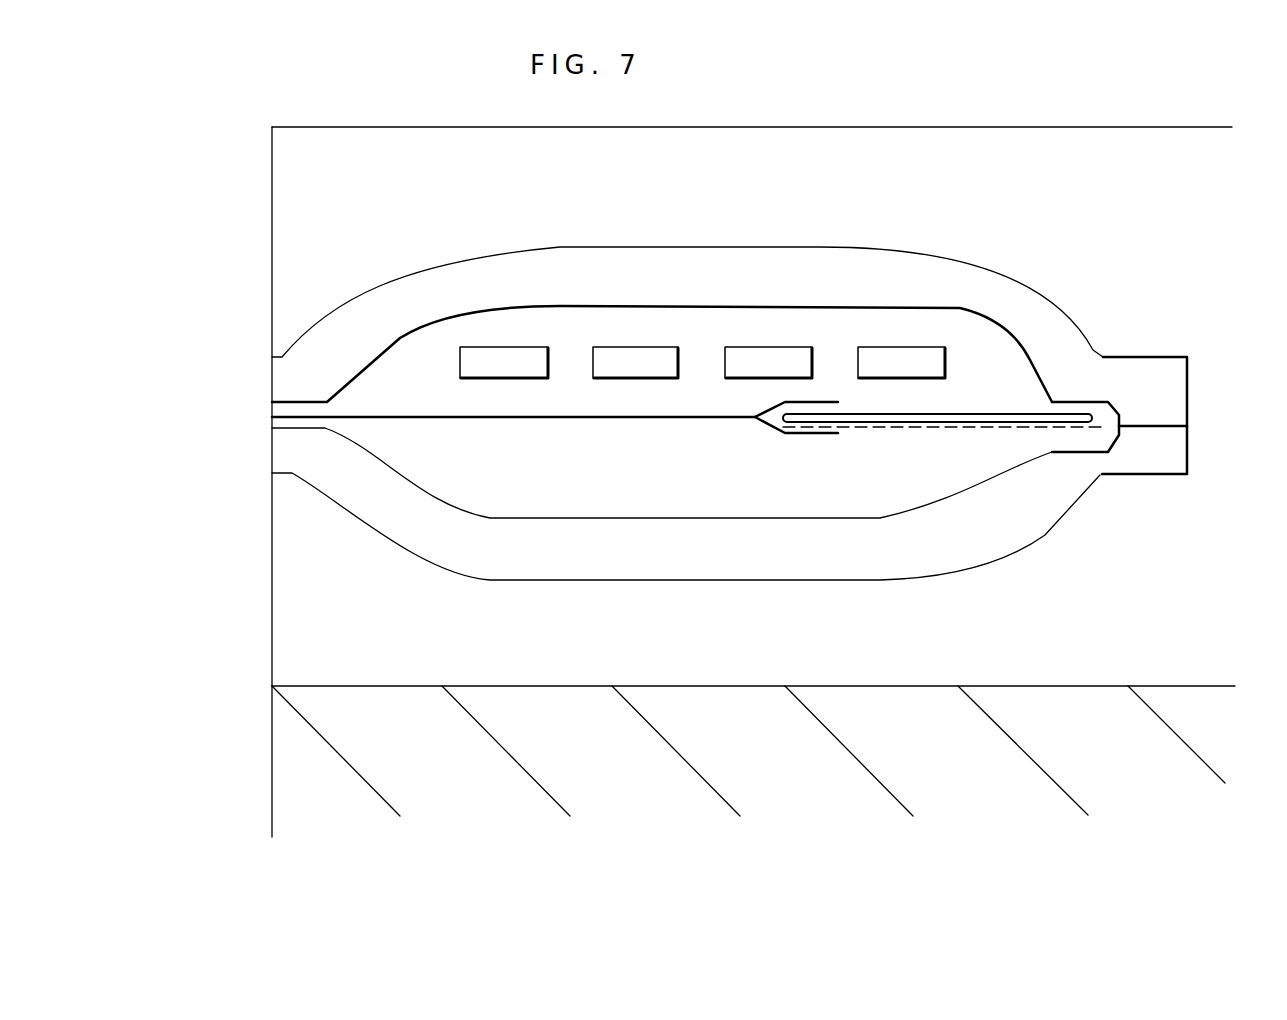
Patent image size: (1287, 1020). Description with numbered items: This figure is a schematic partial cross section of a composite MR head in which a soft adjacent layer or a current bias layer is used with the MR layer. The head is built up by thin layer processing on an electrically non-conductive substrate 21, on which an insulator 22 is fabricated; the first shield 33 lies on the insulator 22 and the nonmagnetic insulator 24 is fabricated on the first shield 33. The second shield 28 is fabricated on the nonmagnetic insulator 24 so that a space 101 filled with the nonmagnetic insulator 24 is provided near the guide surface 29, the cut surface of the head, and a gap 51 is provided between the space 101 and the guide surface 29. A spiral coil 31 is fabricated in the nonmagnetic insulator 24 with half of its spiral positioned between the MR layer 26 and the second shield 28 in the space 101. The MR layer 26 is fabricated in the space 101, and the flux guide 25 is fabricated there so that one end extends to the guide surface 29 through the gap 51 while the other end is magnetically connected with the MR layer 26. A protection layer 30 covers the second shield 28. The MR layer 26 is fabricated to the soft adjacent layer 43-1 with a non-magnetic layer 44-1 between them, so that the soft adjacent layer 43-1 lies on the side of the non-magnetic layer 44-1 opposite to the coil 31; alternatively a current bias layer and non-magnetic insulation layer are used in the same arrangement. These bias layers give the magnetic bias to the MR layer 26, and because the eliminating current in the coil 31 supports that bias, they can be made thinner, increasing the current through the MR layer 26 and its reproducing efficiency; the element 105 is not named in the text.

The protection layer 30 is at (875, 183).
The second shield 28 is at (523, 258).
The nonmagnetic insulator 24 is at (423, 375).
The coil 31 is at (912, 345).
The MR layer 26 is at (1015, 415).
The non-magnetic layer 44-1 is at (1077, 413).
The soft adjacent layer 43-1 is at (1053, 452).
The gap 51 is at (238, 416).
The flux guide 25 is at (540, 418).
The branch portion 105 is at (808, 438).
The space 101 is at (647, 478).
The first shield 33 is at (770, 540).
The guide surface 29 is at (272, 565).
The substrate 21 is at (290, 770).
The insulator 22 is at (1064, 635).